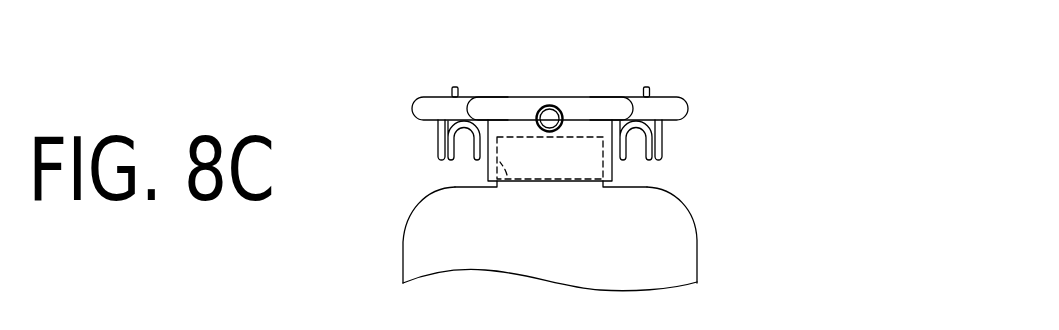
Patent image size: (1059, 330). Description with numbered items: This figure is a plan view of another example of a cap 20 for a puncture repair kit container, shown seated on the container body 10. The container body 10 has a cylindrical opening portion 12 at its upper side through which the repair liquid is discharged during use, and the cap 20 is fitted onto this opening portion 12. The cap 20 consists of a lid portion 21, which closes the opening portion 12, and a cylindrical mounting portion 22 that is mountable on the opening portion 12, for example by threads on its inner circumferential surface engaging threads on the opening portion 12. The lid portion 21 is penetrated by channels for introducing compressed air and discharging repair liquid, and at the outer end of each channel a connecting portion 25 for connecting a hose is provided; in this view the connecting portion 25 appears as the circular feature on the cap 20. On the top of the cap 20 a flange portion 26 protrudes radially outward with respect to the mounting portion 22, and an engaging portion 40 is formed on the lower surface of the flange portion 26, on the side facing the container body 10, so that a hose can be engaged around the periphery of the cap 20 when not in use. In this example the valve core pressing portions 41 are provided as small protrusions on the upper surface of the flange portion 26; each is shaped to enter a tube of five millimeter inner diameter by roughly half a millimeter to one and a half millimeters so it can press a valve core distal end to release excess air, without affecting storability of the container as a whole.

The container body 10 is at (687, 271).
The opening portion 12 is at (580, 168).
The cap 20 is at (566, 92).
The lid portion 21 is at (515, 127).
The mounting portion 22 is at (507, 175).
The connecting portion 25 is at (551, 115).
The flange portion 26 is at (678, 106).
The engaging portion 40 is at (653, 144).
The valve core pressing portion 41 is at (455, 86).